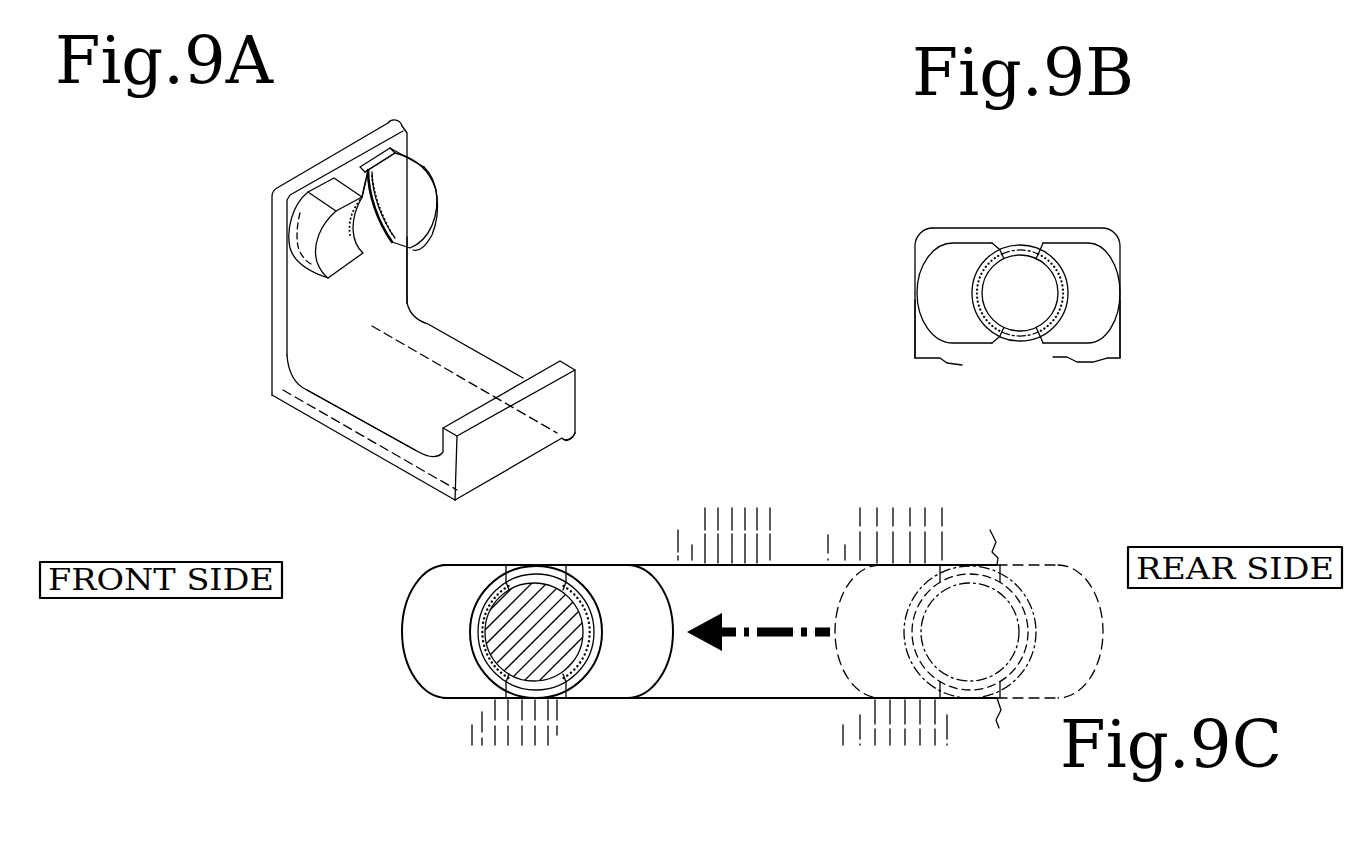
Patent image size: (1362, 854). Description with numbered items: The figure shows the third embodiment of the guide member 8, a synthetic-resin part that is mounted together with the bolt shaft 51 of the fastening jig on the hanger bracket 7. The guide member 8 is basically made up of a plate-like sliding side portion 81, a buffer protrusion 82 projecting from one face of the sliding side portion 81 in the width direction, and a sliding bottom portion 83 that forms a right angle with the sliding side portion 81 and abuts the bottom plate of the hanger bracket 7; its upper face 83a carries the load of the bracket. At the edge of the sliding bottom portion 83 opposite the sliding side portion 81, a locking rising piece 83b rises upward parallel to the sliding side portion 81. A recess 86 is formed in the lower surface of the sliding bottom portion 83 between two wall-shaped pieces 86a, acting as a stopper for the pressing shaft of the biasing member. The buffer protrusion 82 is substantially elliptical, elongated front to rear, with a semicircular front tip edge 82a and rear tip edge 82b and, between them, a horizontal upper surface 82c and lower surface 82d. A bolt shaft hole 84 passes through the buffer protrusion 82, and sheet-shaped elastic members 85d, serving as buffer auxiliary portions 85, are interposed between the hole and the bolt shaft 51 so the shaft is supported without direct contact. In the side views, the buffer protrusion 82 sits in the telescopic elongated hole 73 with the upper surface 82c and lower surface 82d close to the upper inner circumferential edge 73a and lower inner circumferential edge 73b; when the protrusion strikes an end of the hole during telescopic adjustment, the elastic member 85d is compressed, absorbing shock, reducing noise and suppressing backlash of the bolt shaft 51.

In FIG. 9C, the hanger bracket 7 is at (751, 604).
In FIG. 9A, the guide member 8 is at (417, 292).
In FIG. 9B, the guide member 8 is at (1016, 300).
In FIG. 9C, the guide member 8 is at (755, 628).
In FIG. 9C, the bolt shaft 51 is at (523, 613).
In FIG. 9C, the telescopic elongated hole 73 is at (709, 610).
In FIG. 9C, the upper inner circumferential edge 73a is at (810, 567).
In FIG. 9C, the lower inner circumferential edge 73b is at (826, 700).
In FIG. 9A, the sliding side portion 81 is at (272, 262).
In FIG. 9B, the sliding side portion 81 is at (915, 258).
In FIG. 9A, the buffer protrusion 82 is at (381, 205).
In FIG. 9B, the buffer protrusion 82 is at (1016, 300).
In FIG. 9C, the buffer protrusion 82 is at (532, 628).
In FIG. 9B, the front tip edge 82a is at (918, 322).
In FIG. 9C, the front tip edge 82a is at (405, 662).
In FIG. 9B, the rear tip edge 82b is at (1110, 323).
In FIG. 9C, the rear tip edge 82b is at (668, 605).
In FIG. 9A, the upper surface 82c is at (340, 188).
In FIG. 9B, the upper surface 82c is at (960, 243).
In FIG. 9C, the upper surface 82c is at (590, 572).
In FIG. 9A, the lower surface 82d is at (405, 255).
In FIG. 9B, the lower surface 82d is at (1066, 350).
In FIG. 9C, the lower surface 82d is at (588, 702).
In FIG. 9A, the sliding bottom portion 83 is at (460, 392).
In FIG. 9A, the base top surface 83a is at (378, 388).
In FIG. 9A, the locking rising piece 83b is at (568, 387).
In FIG. 9A, the bolt shaft hole 84 is at (353, 178).
In FIG. 9B, the bolt shaft hole 84 is at (1020, 318).
In FIG. 9A, the buffer auxiliary portion 85 is at (381, 250).
In FIG. 9B, the buffer auxiliary portion 85 is at (1016, 293).
In FIG. 9C, the buffer auxiliary portion 85 is at (532, 637).
In FIG. 9A, the elastic member 85d is at (400, 200).
In FIG. 9B, the elastic member 85d is at (974, 289).
In FIG. 9C, the elastic member 85d is at (535, 632).
In FIG. 9A, the recess 86 is at (558, 464).
In FIG. 9A, the wall-shaped piece 86a is at (568, 439).